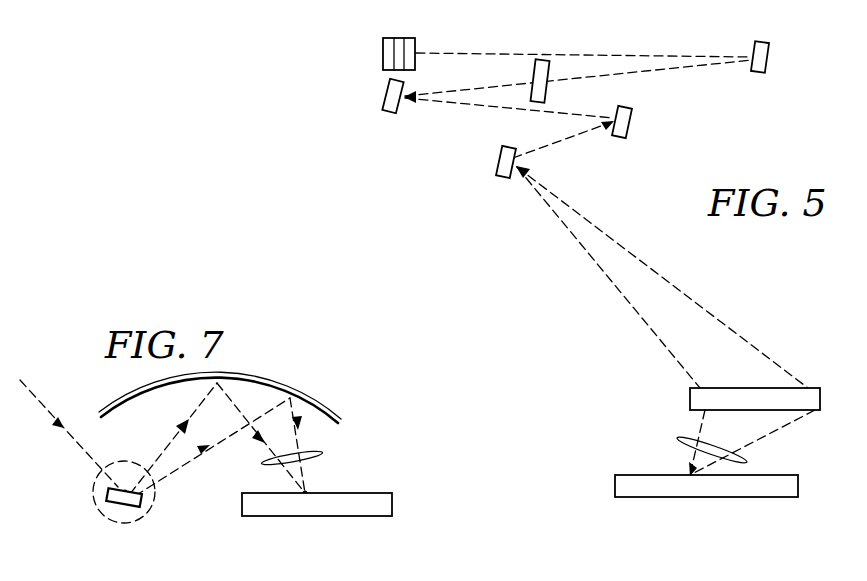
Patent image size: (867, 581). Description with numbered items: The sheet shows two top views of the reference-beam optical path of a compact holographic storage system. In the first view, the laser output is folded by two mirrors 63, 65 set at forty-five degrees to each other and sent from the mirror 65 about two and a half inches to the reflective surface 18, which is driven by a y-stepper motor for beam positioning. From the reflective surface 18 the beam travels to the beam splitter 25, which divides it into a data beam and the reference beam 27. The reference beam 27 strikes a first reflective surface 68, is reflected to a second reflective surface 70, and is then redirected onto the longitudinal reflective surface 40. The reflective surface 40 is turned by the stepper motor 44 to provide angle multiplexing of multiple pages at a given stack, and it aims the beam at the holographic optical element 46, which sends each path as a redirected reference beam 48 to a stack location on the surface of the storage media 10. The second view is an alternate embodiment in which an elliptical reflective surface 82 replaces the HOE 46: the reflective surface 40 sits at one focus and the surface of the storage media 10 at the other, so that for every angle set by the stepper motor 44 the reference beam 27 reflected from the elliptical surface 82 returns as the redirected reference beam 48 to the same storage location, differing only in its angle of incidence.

In FIG. 5, the storage media 10 is at (760, 497).
In FIG. 7, the storage media 10 is at (392, 505).
In FIG. 5, the reflective surface 18 is at (767, 46).
In FIG. 5, the beam splitter 25 is at (546, 61).
In FIG. 7, the reference beam 27 is at (40, 400).
In FIG. 5, the reflective surface 40 is at (498, 164).
In FIG. 7, the reflective surface 40 is at (127, 508).
In FIG. 7, the stepper motor 44 is at (97, 508).
In FIG. 5, the holographic optical element 46 is at (690, 396).
In FIG. 5, the redirected reference beam 48 is at (678, 439).
In FIG. 7, the redirected reference beam 48 is at (322, 453).
In FIG. 5, the mirror 63 is at (416, 55).
In FIG. 5, the mirror 65 is at (383, 60).
In FIG. 5, the first reflective surface 68 is at (388, 112).
In FIG. 5, the second reflective surface 70 is at (632, 121).
In FIG. 7, the elliptical reflective surface 82 is at (273, 384).